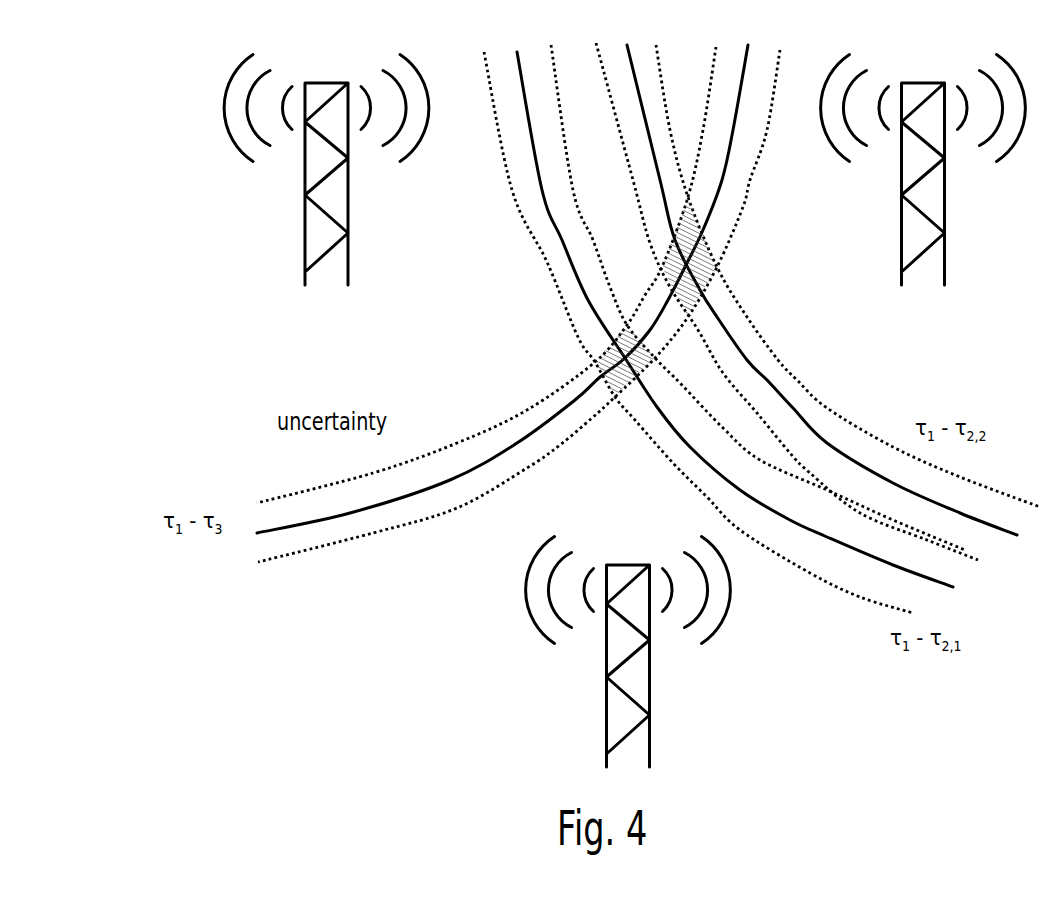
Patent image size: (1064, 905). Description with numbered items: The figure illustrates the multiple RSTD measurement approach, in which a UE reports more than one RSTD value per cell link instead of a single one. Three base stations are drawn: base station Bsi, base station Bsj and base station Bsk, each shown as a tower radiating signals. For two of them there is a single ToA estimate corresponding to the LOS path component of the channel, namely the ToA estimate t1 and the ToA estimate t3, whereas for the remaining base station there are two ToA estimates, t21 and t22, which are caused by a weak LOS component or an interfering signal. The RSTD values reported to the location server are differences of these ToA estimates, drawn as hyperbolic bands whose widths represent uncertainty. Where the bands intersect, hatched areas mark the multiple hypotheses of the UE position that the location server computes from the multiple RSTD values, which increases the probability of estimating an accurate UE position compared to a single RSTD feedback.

The base station i Bsi is at (326, 176).
The base station j Bsj is at (923, 176).
The base station k Bsk is at (628, 658).
The ToA estimate τ1 t1 is at (593, 345).
The ToA estimate τ3 t3 is at (618, 398).
The second ToA estimate τ2,2 t22 is at (712, 240).
The first ToA estimate τ2,1 t21 is at (877, 168).